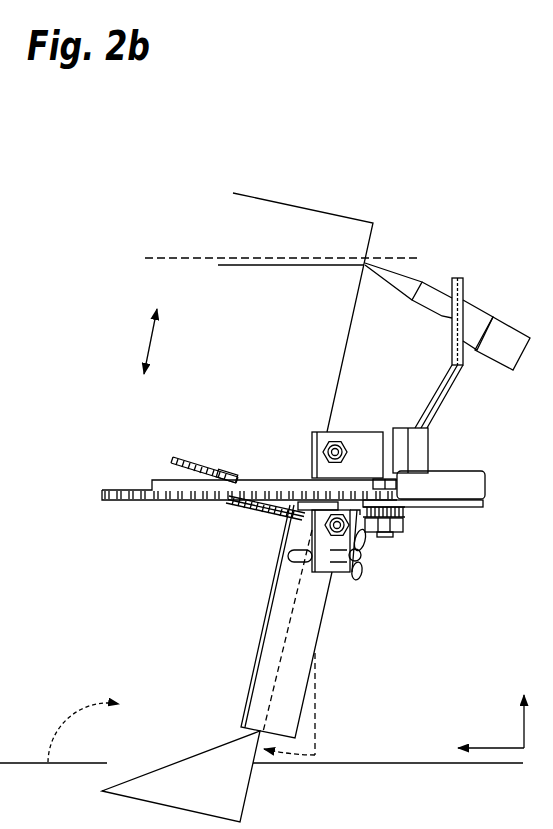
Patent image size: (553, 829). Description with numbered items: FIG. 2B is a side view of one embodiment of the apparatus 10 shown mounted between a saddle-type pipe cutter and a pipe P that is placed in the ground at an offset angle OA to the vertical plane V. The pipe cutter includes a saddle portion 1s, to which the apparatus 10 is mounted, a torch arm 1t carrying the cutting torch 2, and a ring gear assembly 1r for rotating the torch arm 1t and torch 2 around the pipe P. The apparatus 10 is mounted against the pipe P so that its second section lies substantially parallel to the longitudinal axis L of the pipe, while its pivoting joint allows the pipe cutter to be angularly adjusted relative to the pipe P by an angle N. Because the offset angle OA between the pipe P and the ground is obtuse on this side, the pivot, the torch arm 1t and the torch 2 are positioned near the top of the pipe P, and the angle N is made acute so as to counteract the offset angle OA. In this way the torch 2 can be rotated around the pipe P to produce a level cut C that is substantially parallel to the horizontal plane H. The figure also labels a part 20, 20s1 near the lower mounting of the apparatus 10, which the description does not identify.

The pipe P is at (207, 675).
The ring gear assembly 1r is at (143, 469).
The saddle portion 1s is at (374, 469).
The torch arm 1t is at (458, 407).
The cutting torch 2 is at (455, 256).
The apparatus 10 is at (332, 654).
The clamping bracket 20 is at (379, 545).
The wing nut of clamping bracket 20s1 is at (372, 568).
The horizontal plane H is at (138, 247).
The vertical plane V is at (525, 720).
The level cut C is at (205, 267).
The longitudinal axis of the pipe L is at (150, 340).
The offset angle OA is at (72, 708).
The angle N is at (288, 756).